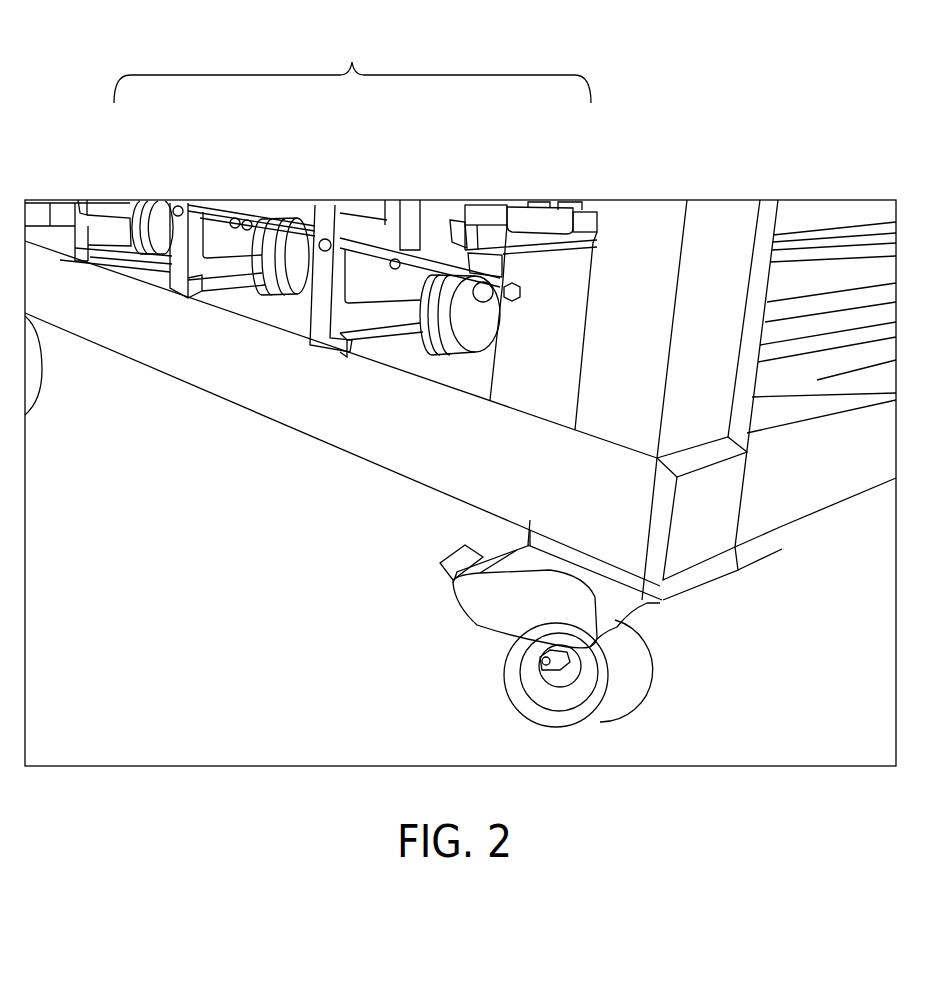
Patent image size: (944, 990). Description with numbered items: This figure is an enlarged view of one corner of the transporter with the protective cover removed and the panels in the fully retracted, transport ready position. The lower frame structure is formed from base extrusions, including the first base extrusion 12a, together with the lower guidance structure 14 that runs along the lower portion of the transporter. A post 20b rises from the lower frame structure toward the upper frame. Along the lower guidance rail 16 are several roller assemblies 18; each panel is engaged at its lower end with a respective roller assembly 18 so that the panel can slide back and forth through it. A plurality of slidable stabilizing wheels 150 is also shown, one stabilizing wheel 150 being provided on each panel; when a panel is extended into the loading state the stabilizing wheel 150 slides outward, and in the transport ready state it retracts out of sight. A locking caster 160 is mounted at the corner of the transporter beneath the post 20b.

The lower guidance structure 14 is at (352, 60).
The slidable stabilizing wheel 150 is at (133, 210).
The roller assembly 18 is at (178, 272).
The lower guidance rail 16 is at (332, 423).
The post 20b is at (720, 248).
The first base extrusion 12a is at (793, 488).
The locking caster 160 is at (611, 695).